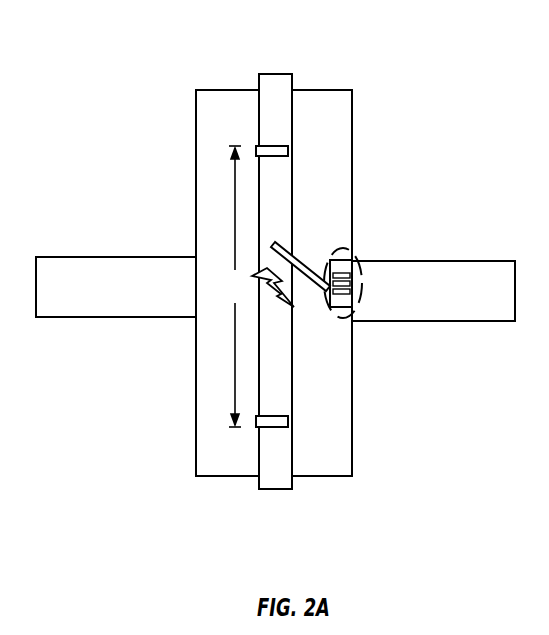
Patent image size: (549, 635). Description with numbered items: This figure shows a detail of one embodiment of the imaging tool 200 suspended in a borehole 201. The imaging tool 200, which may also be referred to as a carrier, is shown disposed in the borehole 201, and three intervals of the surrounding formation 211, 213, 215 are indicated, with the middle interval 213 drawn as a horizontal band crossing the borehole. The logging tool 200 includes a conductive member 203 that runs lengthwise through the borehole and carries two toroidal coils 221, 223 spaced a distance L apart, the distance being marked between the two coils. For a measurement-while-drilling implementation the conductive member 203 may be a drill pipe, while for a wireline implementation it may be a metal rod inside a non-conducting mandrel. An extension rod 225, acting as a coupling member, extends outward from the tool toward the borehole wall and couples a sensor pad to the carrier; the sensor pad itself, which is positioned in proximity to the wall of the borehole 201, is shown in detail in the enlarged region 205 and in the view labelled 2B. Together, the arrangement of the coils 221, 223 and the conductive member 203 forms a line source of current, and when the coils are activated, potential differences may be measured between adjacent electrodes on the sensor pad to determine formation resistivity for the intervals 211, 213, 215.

The imaging tool 200 is at (212, 165).
The borehole 201 is at (204, 96).
The conductive member 203 is at (277, 74).
The sensor element 205 is at (342, 258).
The formation interval 211 is at (98, 174).
The formation interval 213 is at (98, 302).
The formation interval 215 is at (98, 398).
The toroidal coil 221 is at (280, 146).
The toroidal coil 223 is at (278, 428).
The extension rod 225 is at (303, 268).
The detail view reference 2B is at (363, 283).